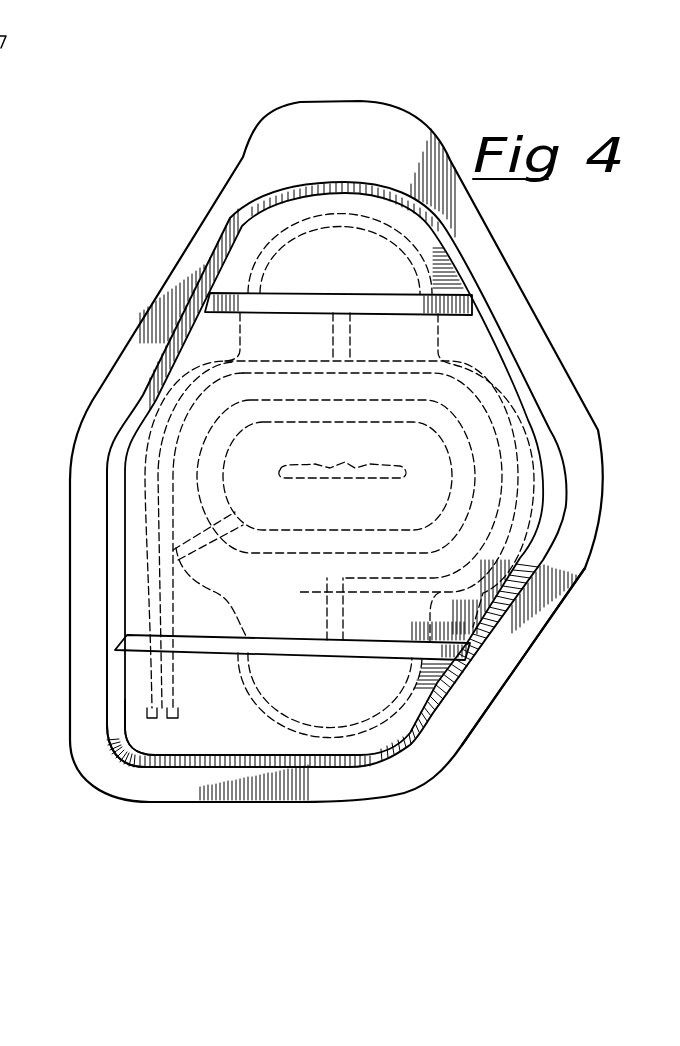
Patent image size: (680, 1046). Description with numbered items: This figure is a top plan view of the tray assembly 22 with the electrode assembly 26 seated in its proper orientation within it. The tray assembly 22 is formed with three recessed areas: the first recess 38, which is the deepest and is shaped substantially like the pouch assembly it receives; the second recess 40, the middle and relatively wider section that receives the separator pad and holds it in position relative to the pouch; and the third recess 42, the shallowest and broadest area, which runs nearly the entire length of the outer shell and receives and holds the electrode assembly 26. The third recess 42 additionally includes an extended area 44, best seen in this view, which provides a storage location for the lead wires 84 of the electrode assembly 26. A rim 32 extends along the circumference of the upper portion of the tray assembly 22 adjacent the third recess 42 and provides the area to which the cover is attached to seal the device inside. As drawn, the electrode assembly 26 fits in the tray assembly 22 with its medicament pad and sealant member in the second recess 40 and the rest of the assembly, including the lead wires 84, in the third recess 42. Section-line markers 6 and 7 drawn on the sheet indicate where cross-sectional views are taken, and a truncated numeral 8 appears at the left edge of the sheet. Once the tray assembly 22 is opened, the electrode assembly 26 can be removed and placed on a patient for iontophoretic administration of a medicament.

The tray assembly 22 is at (233, 151).
The electrode assembly 26 is at (479, 359).
The rim 32 is at (493, 693).
The first recess 38 is at (140, 410).
The second recess 40 is at (180, 340).
The third recess 42 is at (242, 232).
The extended area 44 is at (140, 739).
The lead wires 84 is at (150, 681).
The partially visible numeral 8 is at (4, 824).
The section line 6- 6 is at (336, 68).
The section line 7- 7 is at (42, 473).